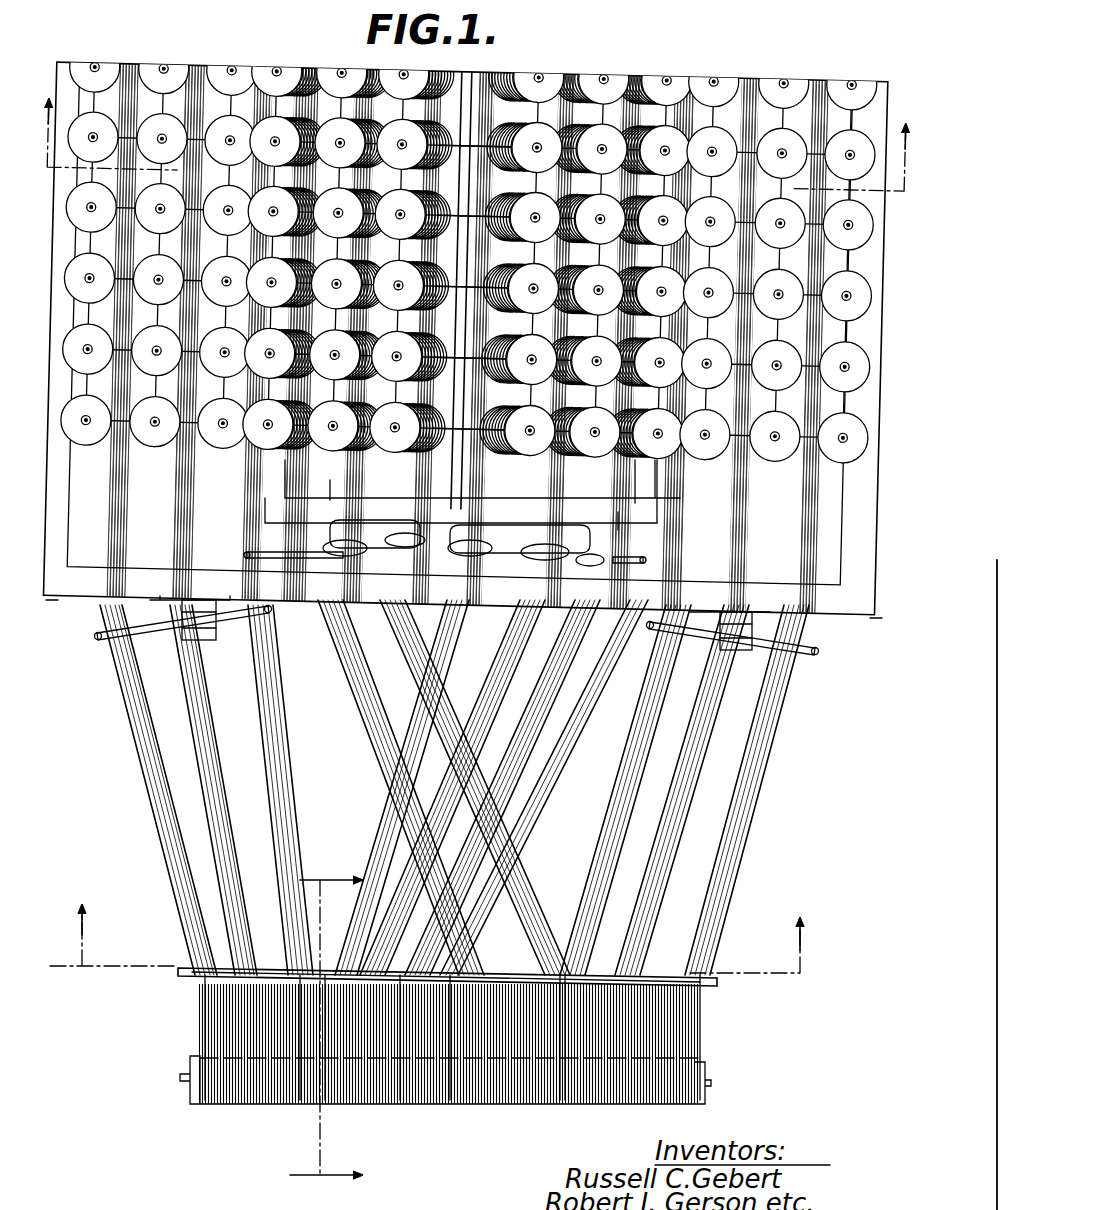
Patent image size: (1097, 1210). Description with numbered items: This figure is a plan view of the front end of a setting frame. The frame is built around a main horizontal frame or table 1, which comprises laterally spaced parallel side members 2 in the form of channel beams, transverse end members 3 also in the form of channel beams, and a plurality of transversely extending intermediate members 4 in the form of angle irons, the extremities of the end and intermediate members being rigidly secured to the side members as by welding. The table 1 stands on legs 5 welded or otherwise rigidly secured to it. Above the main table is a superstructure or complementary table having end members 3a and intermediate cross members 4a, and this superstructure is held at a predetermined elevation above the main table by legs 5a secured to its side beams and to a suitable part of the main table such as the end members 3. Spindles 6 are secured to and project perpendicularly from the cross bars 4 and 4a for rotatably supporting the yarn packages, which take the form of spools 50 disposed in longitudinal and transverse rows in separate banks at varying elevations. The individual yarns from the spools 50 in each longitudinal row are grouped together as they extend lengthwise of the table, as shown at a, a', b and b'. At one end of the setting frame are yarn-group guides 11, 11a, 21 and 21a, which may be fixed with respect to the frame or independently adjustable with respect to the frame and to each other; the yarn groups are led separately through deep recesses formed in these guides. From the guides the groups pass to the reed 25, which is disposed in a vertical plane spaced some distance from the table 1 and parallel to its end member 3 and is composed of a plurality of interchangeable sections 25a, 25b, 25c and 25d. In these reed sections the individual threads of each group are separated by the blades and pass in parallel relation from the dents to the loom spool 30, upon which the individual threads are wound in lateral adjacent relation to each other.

The main horizontal frame or table 1 is at (52, 612).
The side members 2 is at (125, 544).
The end members 3 is at (212, 580).
The end members of superstructure 3a is at (498, 518).
The intermediate members 4 is at (105, 406).
The intermediate cross members 4a is at (482, 150).
The legs 5 is at (104, 558).
The legs of superstructure 5a is at (304, 504).
The spindles 6 is at (326, 1026).
The yarn-group guide 11 is at (154, 624).
The yarn-group guide 11a is at (316, 588).
The yarn-group guide 21 is at (768, 648).
The yarn-group guide 21a is at (568, 578).
The reed 25 is at (180, 976).
The reed section 25a is at (278, 980).
The reed section 25b is at (494, 980).
The reed section 25c is at (379, 980).
The reed section 25d is at (618, 976).
The loom spool 30 is at (458, 1102).
The spools 50 is at (225, 70).
The yarn group a is at (202, 790).
The yarn group a' is at (438, 787).
The yarn group b is at (684, 790).
The yarn group b' is at (491, 787).